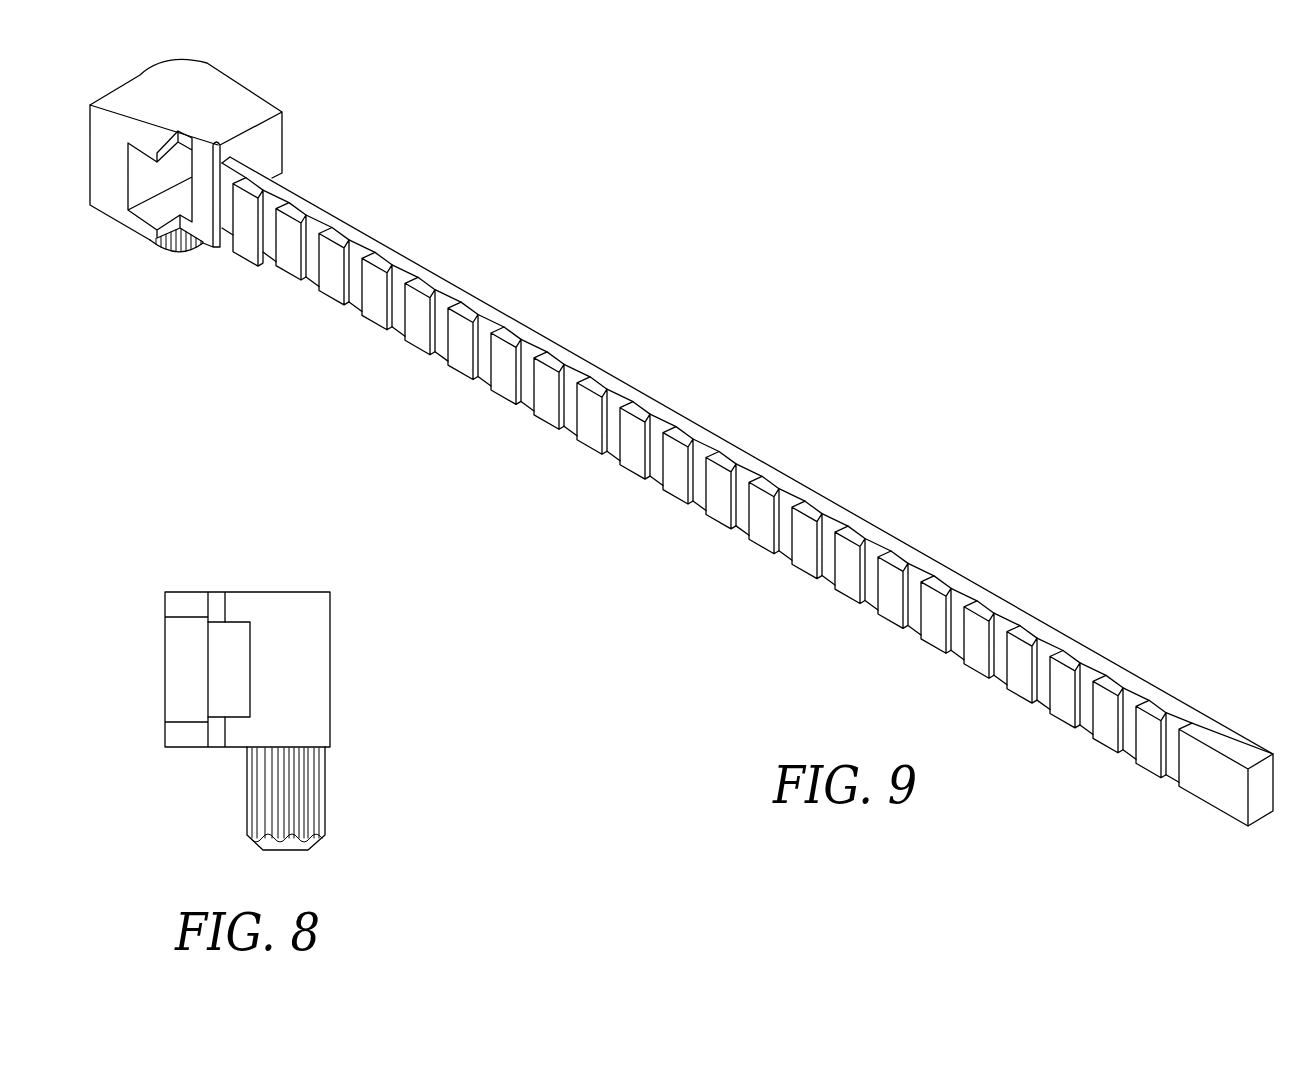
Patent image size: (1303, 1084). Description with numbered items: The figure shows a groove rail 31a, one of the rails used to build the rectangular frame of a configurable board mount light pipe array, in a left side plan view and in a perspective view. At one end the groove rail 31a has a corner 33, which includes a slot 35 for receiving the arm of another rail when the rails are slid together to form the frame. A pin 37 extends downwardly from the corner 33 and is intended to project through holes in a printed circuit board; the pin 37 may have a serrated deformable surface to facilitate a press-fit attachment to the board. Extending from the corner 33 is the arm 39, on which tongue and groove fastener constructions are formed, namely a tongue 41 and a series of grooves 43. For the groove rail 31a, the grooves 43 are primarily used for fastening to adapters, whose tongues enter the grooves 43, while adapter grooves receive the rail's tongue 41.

In FIG. 9, the groove rail 31a is at (670, 425).
In FIG. 9, the corner 33 is at (233, 104).
In FIG. 8, the corner 33 is at (307, 667).
In FIG. 9, the slot 35 is at (157, 211).
In FIG. 8, the slot 35 is at (232, 640).
In FIG. 9, the pin 37 is at (183, 258).
In FIG. 8, the pin 37 is at (313, 787).
In FIG. 9, the arm 39 is at (810, 503).
In FIG. 9, the tongue 41 is at (417, 337).
In FIG. 9, the groove 43 is at (308, 283).